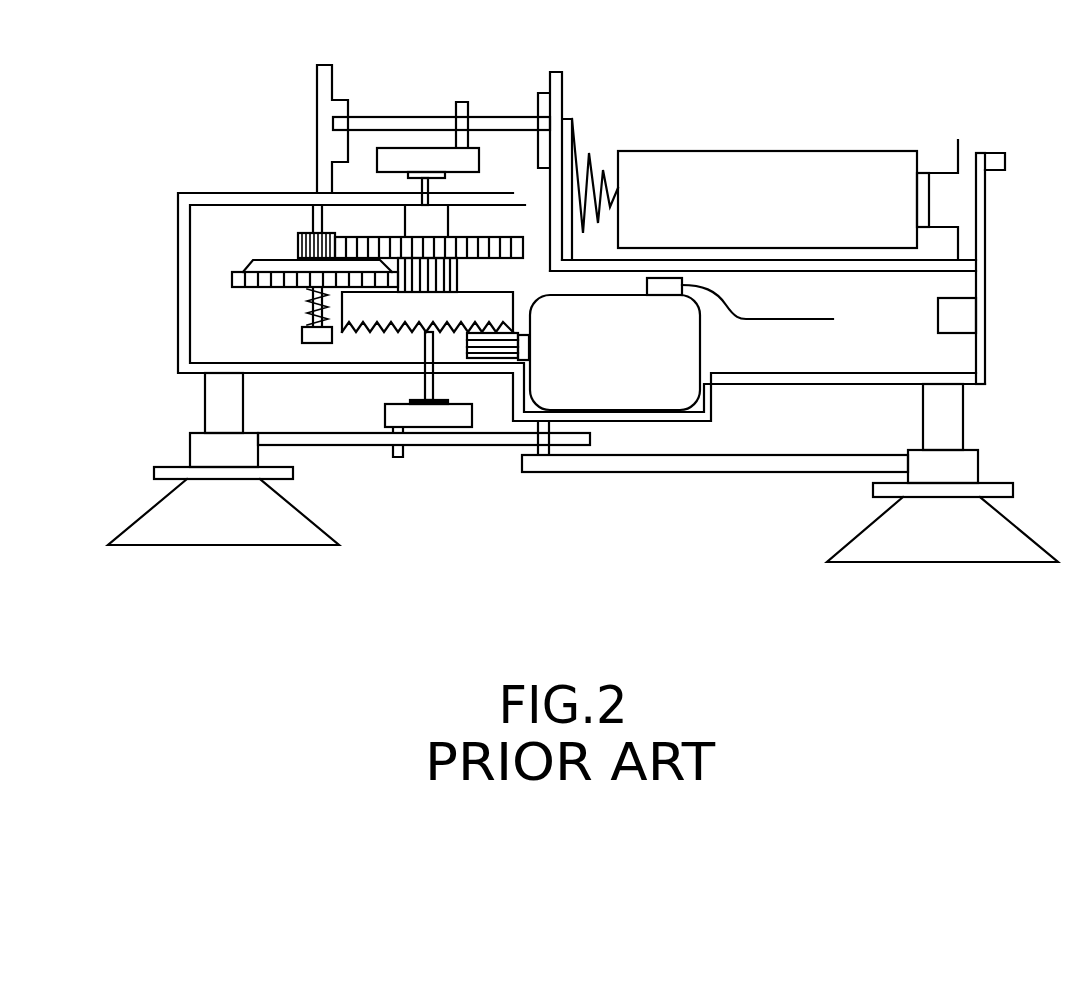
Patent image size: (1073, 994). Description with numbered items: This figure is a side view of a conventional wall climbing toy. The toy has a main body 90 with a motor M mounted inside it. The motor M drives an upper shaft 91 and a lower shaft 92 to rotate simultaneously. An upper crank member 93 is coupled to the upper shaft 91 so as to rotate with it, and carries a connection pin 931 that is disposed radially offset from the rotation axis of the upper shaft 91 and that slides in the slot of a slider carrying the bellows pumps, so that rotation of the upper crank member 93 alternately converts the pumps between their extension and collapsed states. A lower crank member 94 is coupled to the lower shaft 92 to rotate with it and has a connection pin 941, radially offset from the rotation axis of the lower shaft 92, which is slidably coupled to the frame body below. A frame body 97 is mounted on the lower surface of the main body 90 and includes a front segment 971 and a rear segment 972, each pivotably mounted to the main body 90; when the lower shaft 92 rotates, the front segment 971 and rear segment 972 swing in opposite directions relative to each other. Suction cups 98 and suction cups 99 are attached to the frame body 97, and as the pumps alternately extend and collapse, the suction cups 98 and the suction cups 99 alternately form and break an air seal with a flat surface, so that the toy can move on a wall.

The main body 90 is at (215, 200).
The upper shaft 91 is at (422, 187).
The lower shaft 92 is at (423, 388).
The upper crank member 93 is at (410, 157).
The connection pin 931 is at (470, 102).
The lower crank member 94 is at (457, 417).
The connection pin 941 is at (403, 458).
The frame body 97 is at (584, 483).
The front segment 971 is at (340, 438).
The rear segment 972 is at (767, 465).
The suction cups 98 is at (217, 526).
The suction cups 99 is at (938, 542).
The motor M is at (662, 390).